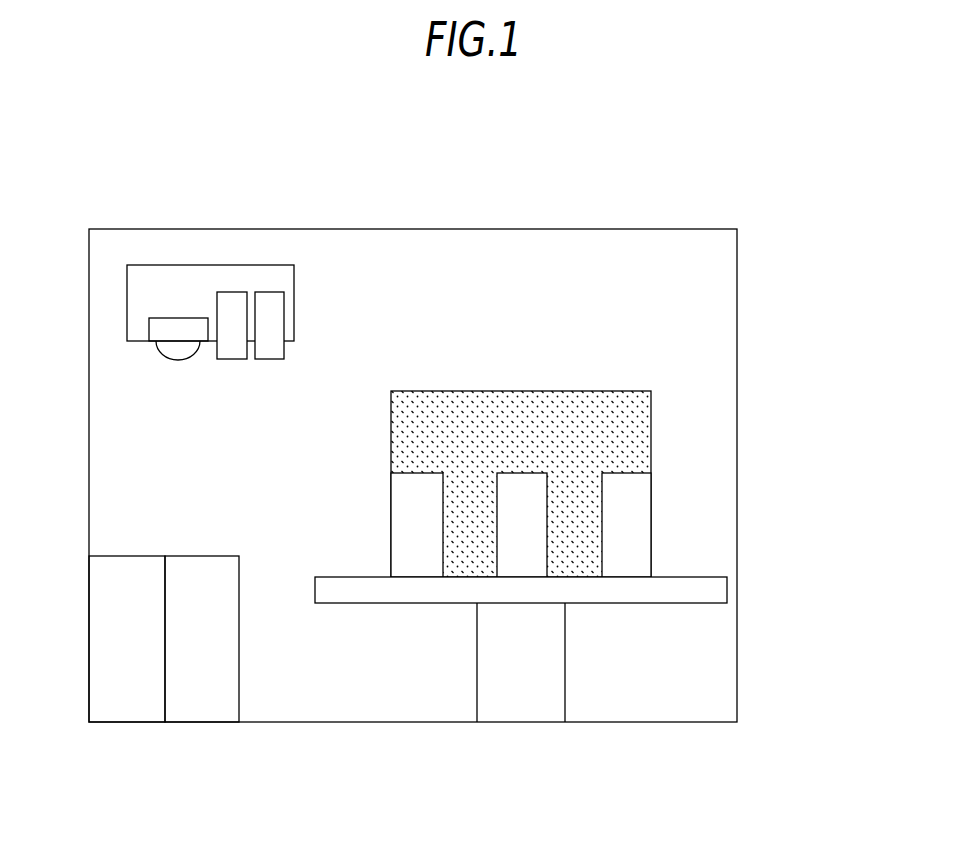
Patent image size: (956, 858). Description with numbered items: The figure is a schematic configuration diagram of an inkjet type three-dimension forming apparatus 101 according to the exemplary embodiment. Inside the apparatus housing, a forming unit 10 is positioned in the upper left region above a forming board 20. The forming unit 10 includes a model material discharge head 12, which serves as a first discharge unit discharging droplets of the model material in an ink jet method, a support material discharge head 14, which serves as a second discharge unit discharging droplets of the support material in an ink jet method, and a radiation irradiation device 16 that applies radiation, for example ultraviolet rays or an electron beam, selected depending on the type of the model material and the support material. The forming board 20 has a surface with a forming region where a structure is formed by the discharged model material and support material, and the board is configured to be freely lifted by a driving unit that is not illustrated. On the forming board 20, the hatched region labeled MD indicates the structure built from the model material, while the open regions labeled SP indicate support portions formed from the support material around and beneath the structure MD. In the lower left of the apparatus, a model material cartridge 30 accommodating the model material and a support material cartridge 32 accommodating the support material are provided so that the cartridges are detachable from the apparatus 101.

The three-dimension forming apparatus 101 is at (582, 167).
The forming unit 10 is at (208, 265).
The model material discharge head 12 is at (230, 292).
The support material discharge head 14 is at (272, 292).
The radiation irradiation device 16 is at (178, 360).
The structure MD is at (620, 413).
The support portion SP is at (510, 512).
The forming board 20 is at (713, 593).
The model material cartridge 30 is at (127, 695).
The support material cartridge 32 is at (197, 695).